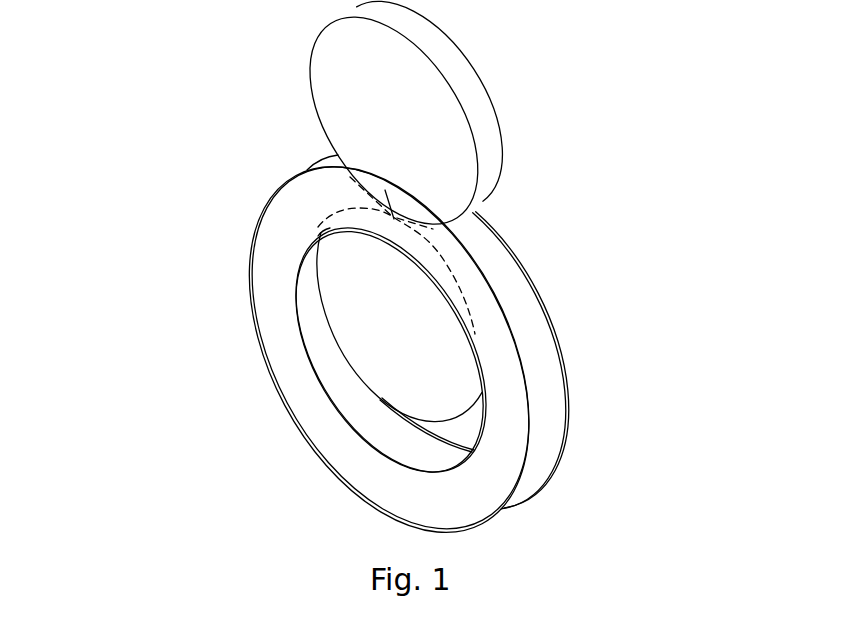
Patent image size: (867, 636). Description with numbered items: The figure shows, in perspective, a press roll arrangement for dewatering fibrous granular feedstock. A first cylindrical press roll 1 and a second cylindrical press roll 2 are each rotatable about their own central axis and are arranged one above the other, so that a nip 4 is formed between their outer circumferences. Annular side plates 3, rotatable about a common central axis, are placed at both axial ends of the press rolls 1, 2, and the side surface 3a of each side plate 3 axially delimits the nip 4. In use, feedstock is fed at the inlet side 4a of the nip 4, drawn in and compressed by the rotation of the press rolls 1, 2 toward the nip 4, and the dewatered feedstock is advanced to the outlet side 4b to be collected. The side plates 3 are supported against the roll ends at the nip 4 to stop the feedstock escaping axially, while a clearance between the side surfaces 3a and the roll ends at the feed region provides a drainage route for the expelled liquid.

The first cylindrical press roll 1 is at (344, 298).
The second cylindrical press roll 2 is at (481, 108).
The annular side plate 3 is at (275, 354).
The side surface 3a is at (503, 276).
The nip 4 is at (385, 190).
The inlet side 4a is at (333, 190).
The outlet side 4b is at (433, 238).